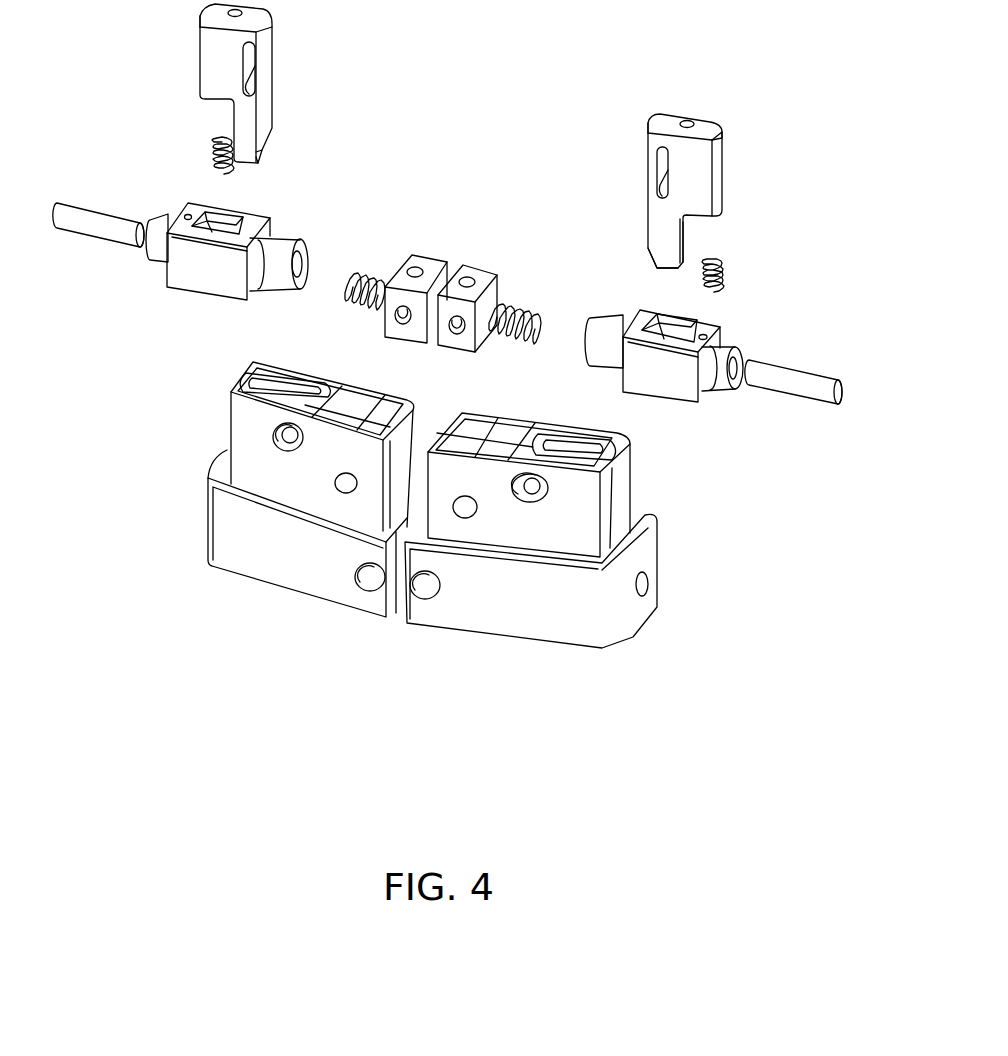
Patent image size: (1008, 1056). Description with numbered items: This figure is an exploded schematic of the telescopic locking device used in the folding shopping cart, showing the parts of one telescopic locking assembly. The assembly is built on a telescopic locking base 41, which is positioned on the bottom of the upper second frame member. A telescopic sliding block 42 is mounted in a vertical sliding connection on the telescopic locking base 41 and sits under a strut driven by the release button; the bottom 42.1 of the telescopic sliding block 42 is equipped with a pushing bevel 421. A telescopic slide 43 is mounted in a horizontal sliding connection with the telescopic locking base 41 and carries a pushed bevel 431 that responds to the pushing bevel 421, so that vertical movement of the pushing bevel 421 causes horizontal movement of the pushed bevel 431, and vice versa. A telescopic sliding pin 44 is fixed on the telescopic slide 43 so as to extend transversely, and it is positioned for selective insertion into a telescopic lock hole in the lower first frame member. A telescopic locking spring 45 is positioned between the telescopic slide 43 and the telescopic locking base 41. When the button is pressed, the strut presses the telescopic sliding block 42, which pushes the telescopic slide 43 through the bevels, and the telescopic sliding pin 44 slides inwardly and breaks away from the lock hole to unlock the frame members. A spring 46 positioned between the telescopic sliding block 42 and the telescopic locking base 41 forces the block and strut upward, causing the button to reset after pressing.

The telescopic locking base 41 is at (498, 597).
The telescopic sliding block 42 is at (714, 165).
The pushing bevel 421 is at (657, 257).
The bottom of the telescopic sliding block 42.1 is at (685, 245).
The pushed bevel 431 is at (650, 330).
The telescopic slide 43 is at (663, 372).
The telescopic sliding pin 44 is at (810, 387).
The telescopic locking spring 45 is at (513, 303).
The spring 46 is at (727, 272).